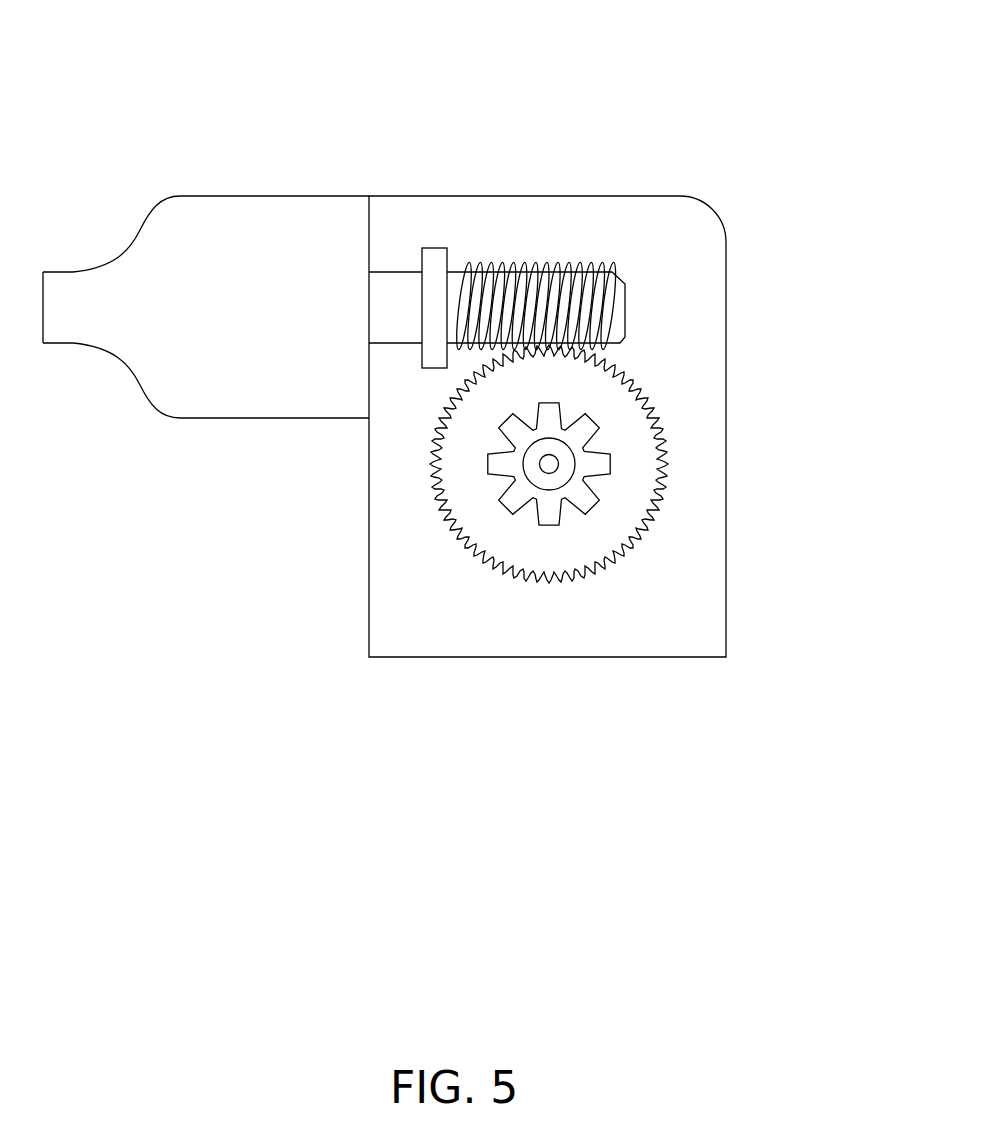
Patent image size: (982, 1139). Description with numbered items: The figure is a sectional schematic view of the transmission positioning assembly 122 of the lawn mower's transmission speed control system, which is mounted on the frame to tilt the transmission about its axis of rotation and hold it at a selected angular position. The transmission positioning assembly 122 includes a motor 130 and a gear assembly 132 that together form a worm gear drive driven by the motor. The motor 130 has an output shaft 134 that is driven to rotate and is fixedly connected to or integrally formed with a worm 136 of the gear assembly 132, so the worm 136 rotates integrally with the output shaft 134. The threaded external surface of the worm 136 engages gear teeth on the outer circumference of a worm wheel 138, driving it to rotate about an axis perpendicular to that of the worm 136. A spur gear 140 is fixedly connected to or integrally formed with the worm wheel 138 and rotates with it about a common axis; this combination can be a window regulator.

The transmission positioning assembly 122 is at (541, 72).
The motor 130 is at (133, 227).
The gear assembly 132 is at (786, 307).
The output shaft 134 is at (400, 295).
The worm 136 is at (600, 267).
The worm wheel 138 is at (618, 415).
The spur gear 140 is at (488, 462).